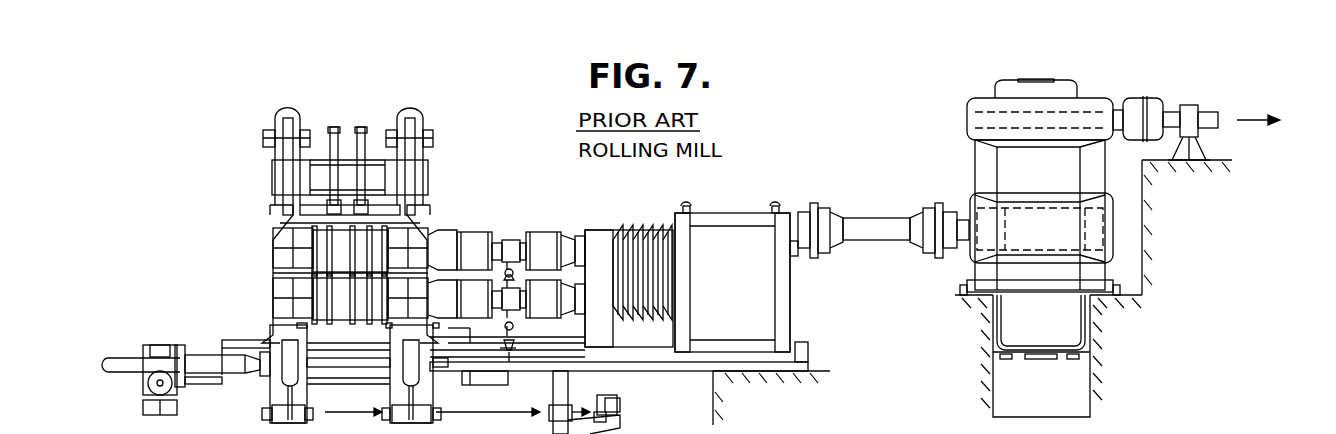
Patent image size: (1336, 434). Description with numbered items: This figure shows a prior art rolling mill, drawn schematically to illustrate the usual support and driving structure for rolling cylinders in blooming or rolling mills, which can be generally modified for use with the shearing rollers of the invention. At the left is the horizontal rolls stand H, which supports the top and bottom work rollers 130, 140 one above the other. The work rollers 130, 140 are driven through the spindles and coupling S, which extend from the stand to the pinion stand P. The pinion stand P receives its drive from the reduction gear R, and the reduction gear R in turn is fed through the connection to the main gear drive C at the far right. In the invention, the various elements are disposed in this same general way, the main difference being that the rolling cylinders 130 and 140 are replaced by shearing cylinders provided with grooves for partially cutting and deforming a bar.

The horizontal rolls stand H is at (396, 118).
The work roller 140 is at (338, 250).
The work roller 130 is at (342, 296).
The spindles and coupling S is at (512, 230).
The pinion stand P is at (737, 218).
The reduction gear R is at (1033, 88).
The connection to the main gear drive C is at (1267, 121).